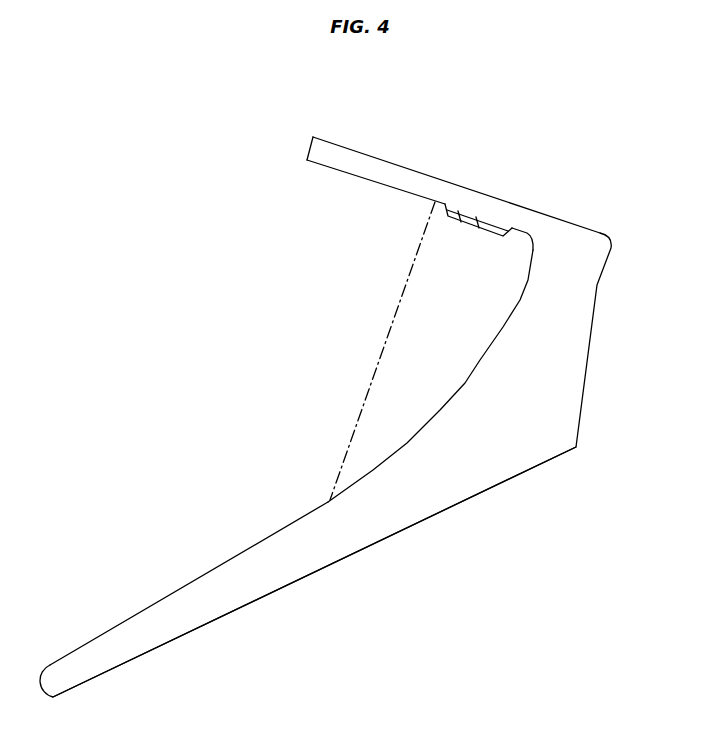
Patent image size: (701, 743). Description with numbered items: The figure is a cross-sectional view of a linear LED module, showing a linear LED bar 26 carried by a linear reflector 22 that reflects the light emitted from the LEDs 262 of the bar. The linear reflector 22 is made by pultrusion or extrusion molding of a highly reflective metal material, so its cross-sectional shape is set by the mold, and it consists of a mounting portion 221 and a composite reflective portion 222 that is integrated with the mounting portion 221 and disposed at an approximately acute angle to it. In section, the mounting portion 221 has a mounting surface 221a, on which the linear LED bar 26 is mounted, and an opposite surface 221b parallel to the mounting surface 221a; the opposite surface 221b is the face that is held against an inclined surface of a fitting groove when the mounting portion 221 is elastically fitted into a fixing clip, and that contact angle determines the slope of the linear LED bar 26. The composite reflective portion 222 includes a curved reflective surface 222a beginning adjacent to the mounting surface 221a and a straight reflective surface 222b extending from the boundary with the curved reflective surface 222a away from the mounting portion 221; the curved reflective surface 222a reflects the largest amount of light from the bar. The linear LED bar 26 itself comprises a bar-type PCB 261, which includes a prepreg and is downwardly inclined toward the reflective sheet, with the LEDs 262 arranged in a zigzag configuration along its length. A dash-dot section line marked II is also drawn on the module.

The linear reflector 22 is at (606, 226).
The mounting portion 221 is at (363, 163).
The mounting surface 221a is at (338, 172).
The opposite surface 221b is at (348, 147).
The composite reflective portion 222 is at (572, 533).
The curved reflective surface 222a is at (465, 387).
The straight reflective surface 222b is at (262, 540).
The linear LED bar 26 is at (440, 234).
The bar-type PCB 261 is at (507, 227).
The LEDs 262 is at (460, 217).
The section line II is at (368, 393).